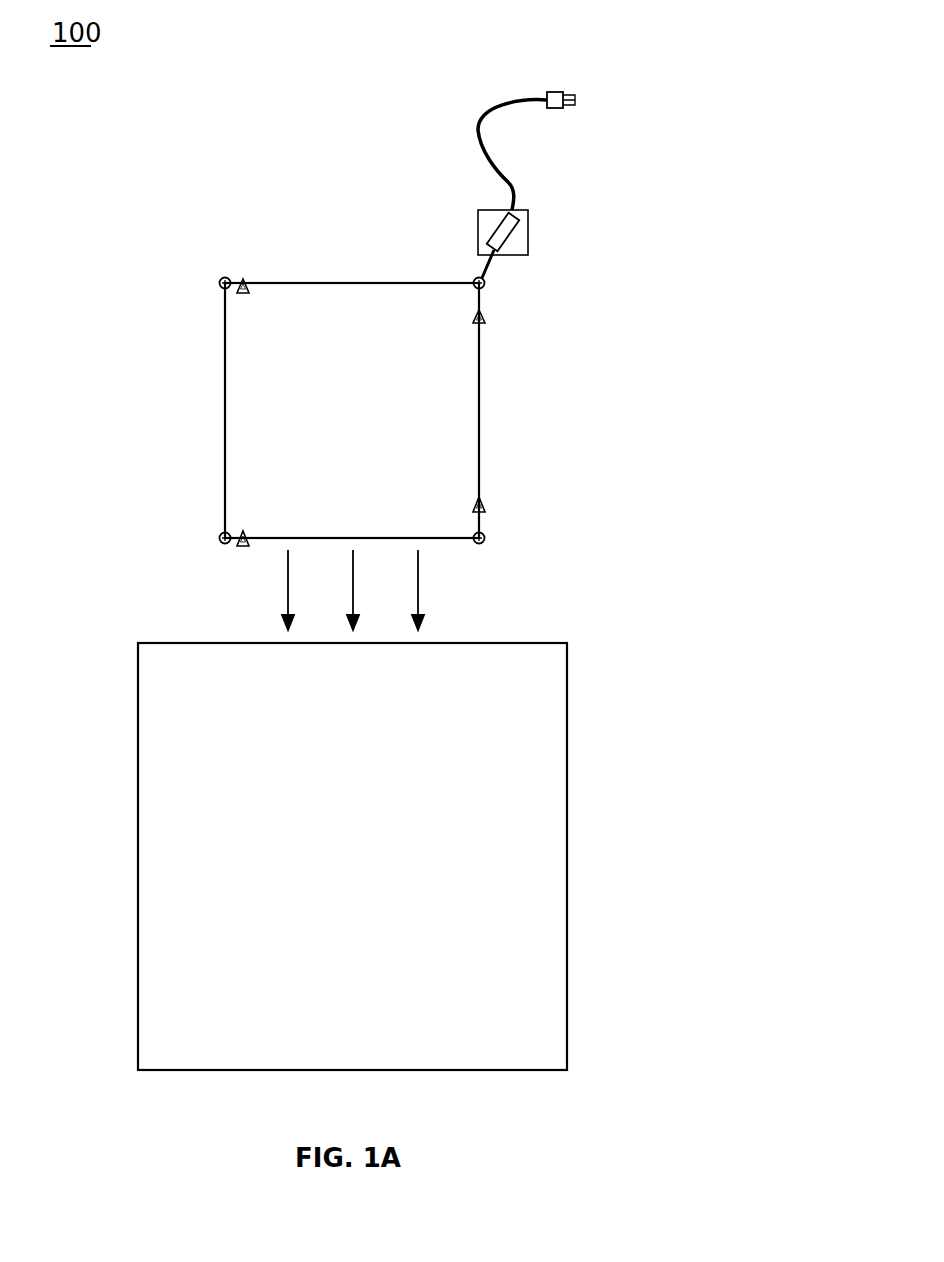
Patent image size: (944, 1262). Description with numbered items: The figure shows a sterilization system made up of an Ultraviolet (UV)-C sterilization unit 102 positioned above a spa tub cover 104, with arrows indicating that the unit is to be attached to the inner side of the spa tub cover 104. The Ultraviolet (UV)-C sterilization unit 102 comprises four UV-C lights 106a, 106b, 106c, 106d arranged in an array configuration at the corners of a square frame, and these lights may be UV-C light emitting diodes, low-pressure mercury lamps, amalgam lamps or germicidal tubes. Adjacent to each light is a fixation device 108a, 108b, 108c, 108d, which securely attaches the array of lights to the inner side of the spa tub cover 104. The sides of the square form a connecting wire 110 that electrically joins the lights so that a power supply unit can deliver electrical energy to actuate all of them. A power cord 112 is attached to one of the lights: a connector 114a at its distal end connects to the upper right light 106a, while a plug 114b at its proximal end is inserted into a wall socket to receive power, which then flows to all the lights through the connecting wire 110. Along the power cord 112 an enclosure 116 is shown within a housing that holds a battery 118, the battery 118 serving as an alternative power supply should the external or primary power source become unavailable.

The Ultraviolet (UV)-C sterilization unit 102 is at (336, 412).
The spa tub cover 104 is at (213, 861).
The Ultraviolet (UV)-C light 106a is at (485, 283).
The Ultraviolet (UV)-C light 106b is at (485, 540).
The Ultraviolet (UV)-C light 106c is at (220, 540).
The Ultraviolet (UV)-C light 106d is at (220, 285).
The fixation device 108a is at (487, 317).
The fixation device 108b is at (485, 503).
The fixation device 108c is at (242, 548).
The fixation device 108d is at (242, 280).
The connecting wire 110 is at (480, 438).
The power cord 112 is at (493, 167).
The connector 114a is at (487, 268).
The plug 114b is at (555, 92).
The enclosure 116 is at (478, 233).
The battery 118 is at (520, 211).